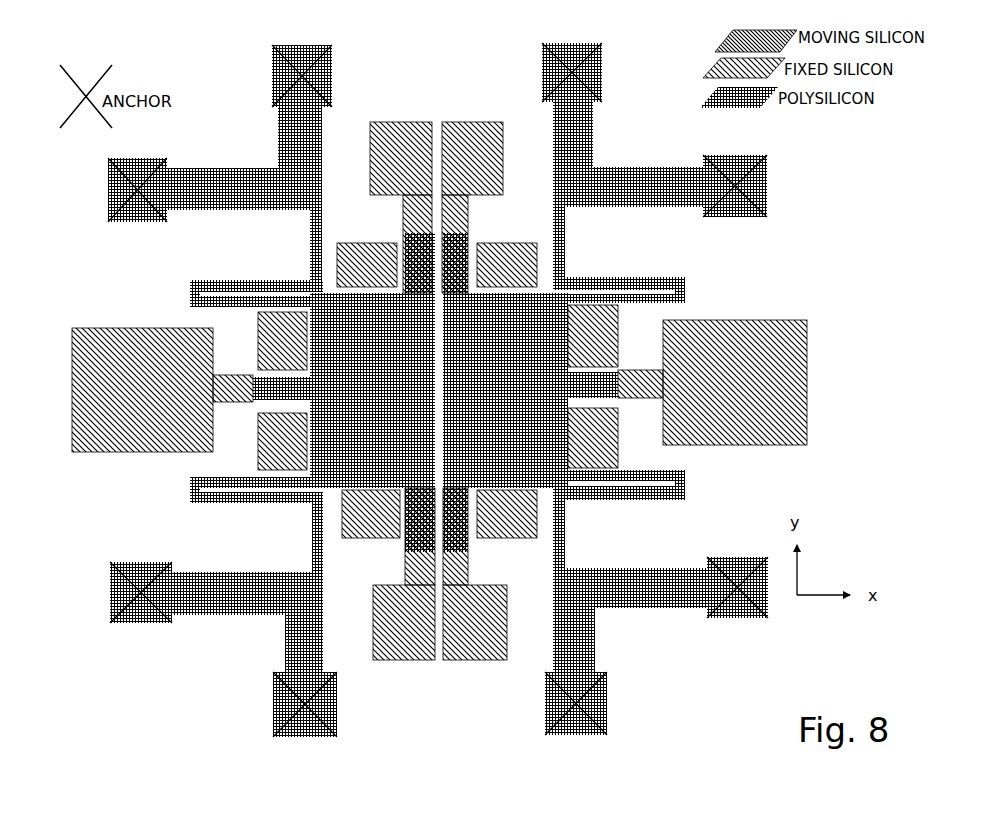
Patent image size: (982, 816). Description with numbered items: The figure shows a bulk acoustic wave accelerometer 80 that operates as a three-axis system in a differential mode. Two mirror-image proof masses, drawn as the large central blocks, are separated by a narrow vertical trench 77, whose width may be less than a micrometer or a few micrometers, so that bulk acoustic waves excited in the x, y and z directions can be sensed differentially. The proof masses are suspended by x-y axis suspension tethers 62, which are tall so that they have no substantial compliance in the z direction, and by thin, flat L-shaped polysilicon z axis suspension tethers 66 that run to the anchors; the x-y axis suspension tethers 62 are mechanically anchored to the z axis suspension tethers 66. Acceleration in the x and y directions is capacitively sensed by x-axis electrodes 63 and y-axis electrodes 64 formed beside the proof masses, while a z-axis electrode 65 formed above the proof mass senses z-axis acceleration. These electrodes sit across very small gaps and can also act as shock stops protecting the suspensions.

The x-y axis suspension tethers 62 is at (223, 281).
The x-axis electrodes 63 is at (258, 342).
The y-axis electrodes 64 is at (373, 243).
The z-axis electrode 65 is at (650, 503).
The z axis suspension tethers 66 is at (648, 208).
The vertical trench 77 is at (305, 504).
The bulk acoustic wave accelerometer 80 is at (806, 242).